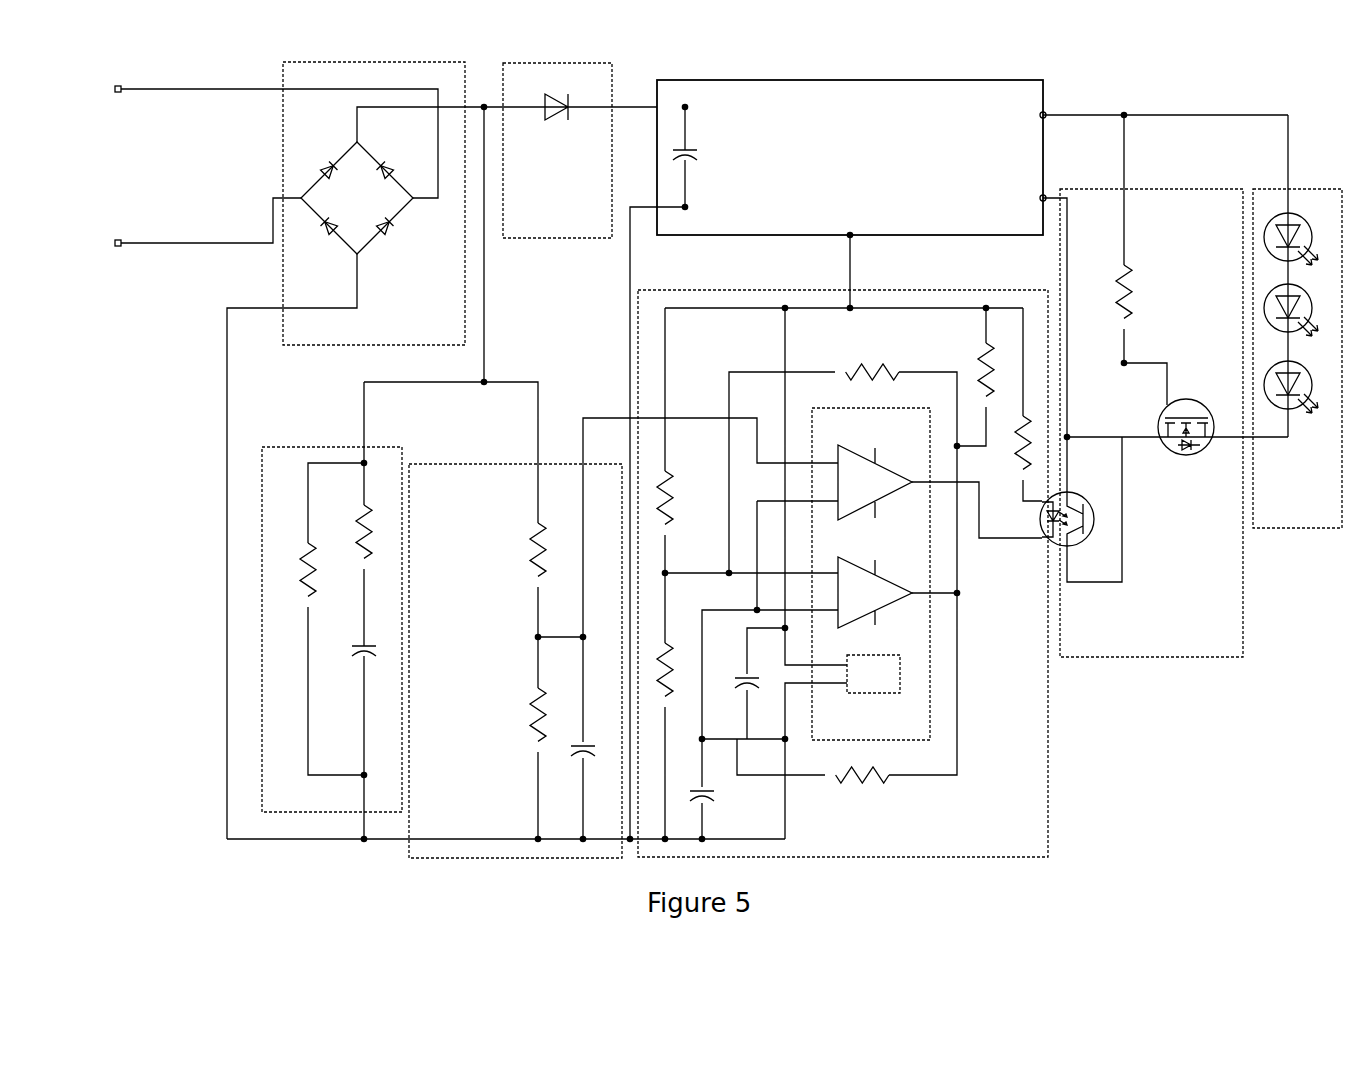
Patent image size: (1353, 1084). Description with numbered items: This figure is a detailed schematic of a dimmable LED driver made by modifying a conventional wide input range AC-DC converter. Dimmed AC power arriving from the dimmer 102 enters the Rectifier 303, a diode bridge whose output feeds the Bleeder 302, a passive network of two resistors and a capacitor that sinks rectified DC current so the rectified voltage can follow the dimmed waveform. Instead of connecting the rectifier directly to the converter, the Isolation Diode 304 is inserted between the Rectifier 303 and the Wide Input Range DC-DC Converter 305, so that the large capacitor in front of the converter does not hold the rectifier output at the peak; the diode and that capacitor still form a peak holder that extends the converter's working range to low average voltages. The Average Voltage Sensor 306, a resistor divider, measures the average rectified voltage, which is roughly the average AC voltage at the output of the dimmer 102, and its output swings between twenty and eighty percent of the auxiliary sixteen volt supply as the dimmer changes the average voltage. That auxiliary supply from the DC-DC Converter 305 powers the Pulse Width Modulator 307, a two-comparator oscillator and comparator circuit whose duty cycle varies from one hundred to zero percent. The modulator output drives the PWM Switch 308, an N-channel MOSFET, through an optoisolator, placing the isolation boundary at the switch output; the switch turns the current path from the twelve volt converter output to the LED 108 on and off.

The Dimmer 102 is at (260, 166).
The Rectifier 303 is at (386, 450).
The Isolation Diode 304 is at (569, 222).
The Wide Input Range DC-DC Converter 305 is at (838, 459).
The Bleeder 302 is at (332, 612).
The Average Voltage Sensor 306 is at (601, 618).
The Pulse Width Modulator 307 is at (840, 573).
The PWM Switch 308 is at (1164, 384).
The LED 108 is at (1297, 321).